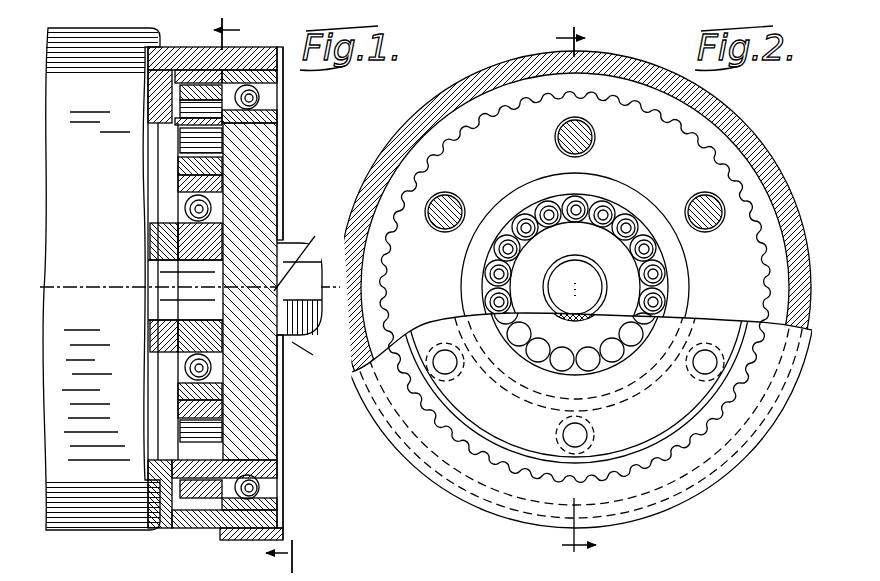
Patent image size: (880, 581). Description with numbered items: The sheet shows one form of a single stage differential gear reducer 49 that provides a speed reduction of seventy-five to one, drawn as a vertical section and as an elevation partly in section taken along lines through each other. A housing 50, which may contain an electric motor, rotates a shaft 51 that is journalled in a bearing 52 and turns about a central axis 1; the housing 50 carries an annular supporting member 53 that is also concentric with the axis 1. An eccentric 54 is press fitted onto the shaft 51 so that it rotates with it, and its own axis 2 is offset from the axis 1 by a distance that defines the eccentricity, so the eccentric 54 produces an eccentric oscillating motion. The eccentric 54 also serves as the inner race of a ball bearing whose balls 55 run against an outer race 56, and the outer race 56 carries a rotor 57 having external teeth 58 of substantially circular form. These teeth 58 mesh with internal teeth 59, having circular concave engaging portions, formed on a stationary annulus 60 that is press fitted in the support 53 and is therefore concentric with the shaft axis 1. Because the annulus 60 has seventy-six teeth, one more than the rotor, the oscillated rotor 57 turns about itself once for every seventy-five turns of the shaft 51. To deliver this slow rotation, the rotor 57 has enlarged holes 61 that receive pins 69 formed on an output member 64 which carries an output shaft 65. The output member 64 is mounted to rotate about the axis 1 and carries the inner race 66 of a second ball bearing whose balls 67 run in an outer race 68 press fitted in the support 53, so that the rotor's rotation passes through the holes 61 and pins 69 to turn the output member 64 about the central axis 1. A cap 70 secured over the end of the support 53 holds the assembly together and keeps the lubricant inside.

In FIG. 1, the central axis 1 is at (307, 356).
In FIG. 2, the central axis 1 is at (568, 292).
In FIG. 1, the central axis of the eccentric 2 is at (273, 295).
In FIG. 1, the differential gear reducer 49 is at (297, 130).
In FIG. 2, the differential gear reducer 49 is at (748, 113).
In FIG. 1, the housing 50 is at (115, 543).
In FIG. 1, the shaft 51 is at (145, 308).
In FIG. 2, the shaft 51 is at (574, 264).
In FIG. 1, the bearing 52 is at (152, 333).
In FIG. 1, the annular supporting member 53 is at (239, 537).
In FIG. 2, the annular supporting member 53 is at (462, 82).
In FIG. 1, the eccentric 54 is at (178, 224).
In FIG. 1, the balls 55 is at (188, 207).
In FIG. 2, the balls 55 is at (623, 208).
In FIG. 1, the outer race 56 is at (185, 185).
In FIG. 2, the outer race 56 is at (652, 214).
In FIG. 1, the rotor 57 is at (180, 165).
In FIG. 2, the rotor 57 is at (662, 142).
In FIG. 1, the external teeth 58 is at (192, 462).
In FIG. 2, the external teeth 58 is at (760, 212).
In FIG. 1, the internal teeth 59 is at (190, 485).
In FIG. 2, the internal teeth 59 is at (757, 216).
In FIG. 1, the annulus 60 is at (190, 62).
In FIG. 2, the annulus 60 is at (631, 88).
In FIG. 1, the enlarged holes 61 is at (150, 117).
In FIG. 2, the enlarged holes 61 is at (559, 132).
In FIG. 1, the output member 64 is at (265, 395).
In FIG. 2, the output member 64 is at (472, 431).
In FIG. 1, the output shaft 65 is at (298, 245).
In FIG. 2, the output shaft 65 is at (560, 334).
In FIG. 1, the inner race 66 is at (273, 453).
In FIG. 2, the inner race 66 is at (508, 456).
In FIG. 1, the balls 67 is at (250, 483).
In FIG. 1, the outer race 68 is at (278, 497).
In FIG. 1, the pins 69 is at (188, 147).
In FIG. 2, the pins 69 is at (591, 140).
In FIG. 1, the cap 70 is at (283, 521).
In FIG. 2, the cap 70 is at (495, 482).